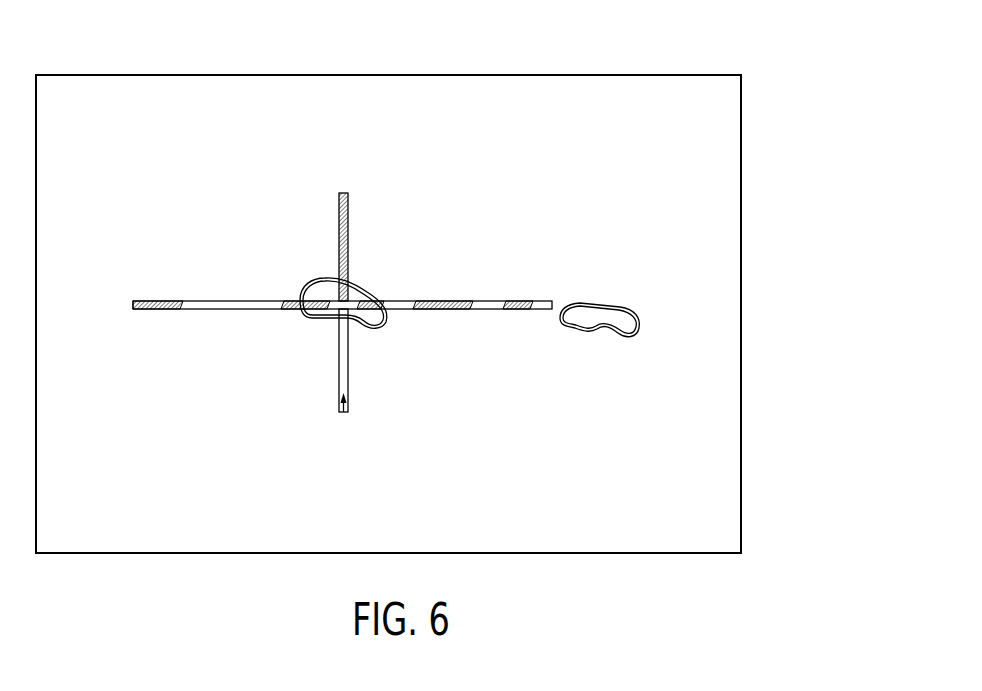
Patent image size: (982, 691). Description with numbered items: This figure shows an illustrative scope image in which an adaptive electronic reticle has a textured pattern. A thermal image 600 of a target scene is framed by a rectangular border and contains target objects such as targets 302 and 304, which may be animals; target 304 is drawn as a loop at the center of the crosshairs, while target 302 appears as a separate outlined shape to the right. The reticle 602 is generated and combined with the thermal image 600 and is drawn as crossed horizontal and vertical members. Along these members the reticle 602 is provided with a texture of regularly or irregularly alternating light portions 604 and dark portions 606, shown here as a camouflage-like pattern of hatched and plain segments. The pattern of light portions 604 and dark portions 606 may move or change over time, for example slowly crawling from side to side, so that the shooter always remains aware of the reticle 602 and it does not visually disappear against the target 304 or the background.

The thermal image 600 is at (683, 53).
The dark portions 606 is at (211, 286).
The light portions 604 is at (256, 286).
The reticle 602 is at (343, 412).
The target 304 is at (368, 328).
The target 302 is at (620, 322).